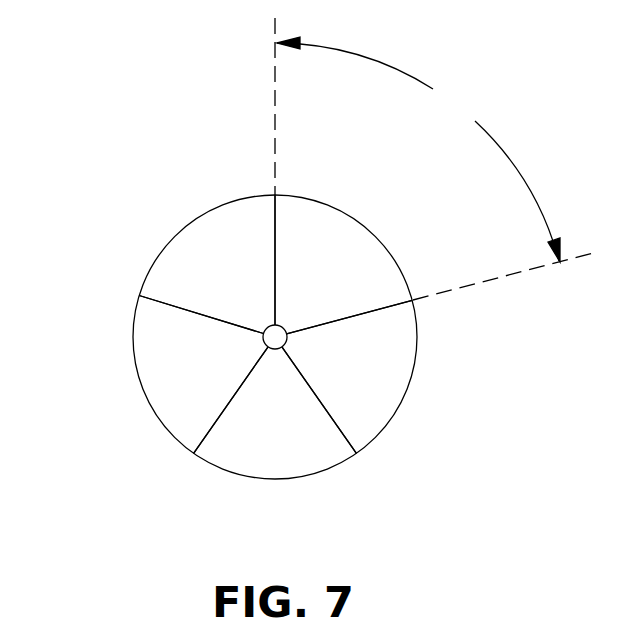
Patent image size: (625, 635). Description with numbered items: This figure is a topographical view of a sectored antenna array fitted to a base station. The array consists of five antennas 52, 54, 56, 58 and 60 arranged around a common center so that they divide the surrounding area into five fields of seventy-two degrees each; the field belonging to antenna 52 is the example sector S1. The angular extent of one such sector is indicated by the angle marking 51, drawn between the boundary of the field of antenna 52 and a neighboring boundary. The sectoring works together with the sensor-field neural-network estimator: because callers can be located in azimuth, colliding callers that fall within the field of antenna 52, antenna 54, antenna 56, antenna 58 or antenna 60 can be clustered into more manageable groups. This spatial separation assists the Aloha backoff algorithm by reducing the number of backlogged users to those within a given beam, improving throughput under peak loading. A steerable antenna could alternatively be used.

The rotation angle 51 is at (434, 159).
The antenna 52 is at (340, 208).
The antenna 54 is at (408, 393).
The antenna 56 is at (283, 482).
The antenna 58 is at (145, 400).
The antenna 60 is at (190, 222).